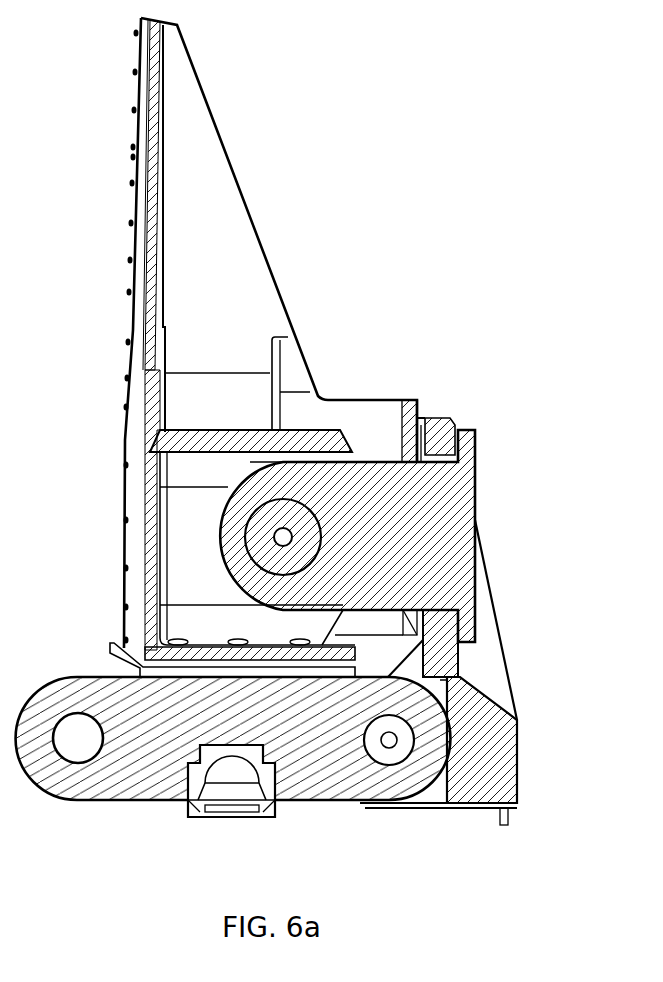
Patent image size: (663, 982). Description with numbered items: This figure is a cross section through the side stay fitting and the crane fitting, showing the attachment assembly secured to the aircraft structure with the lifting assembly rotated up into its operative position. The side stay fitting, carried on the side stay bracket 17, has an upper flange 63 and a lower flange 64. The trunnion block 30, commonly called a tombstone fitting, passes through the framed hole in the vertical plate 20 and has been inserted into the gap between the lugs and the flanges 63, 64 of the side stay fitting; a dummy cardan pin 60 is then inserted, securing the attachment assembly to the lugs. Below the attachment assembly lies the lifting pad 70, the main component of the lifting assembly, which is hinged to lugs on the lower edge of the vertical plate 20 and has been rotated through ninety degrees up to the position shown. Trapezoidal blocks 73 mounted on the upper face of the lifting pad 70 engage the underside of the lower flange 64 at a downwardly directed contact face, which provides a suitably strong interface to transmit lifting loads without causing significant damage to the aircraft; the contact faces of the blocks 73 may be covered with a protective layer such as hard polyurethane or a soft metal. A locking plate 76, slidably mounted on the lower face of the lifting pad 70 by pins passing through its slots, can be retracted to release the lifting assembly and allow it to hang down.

The side stay bracket 17 is at (250, 222).
The vertical plate 20 is at (520, 752).
The trunnion block 30 is at (365, 462).
The dummy cardan pin 60 is at (320, 520).
The upper flange 63 is at (315, 427).
The lower flange 64 is at (197, 645).
The lifting pad 70 is at (316, 800).
The trapezoidal blocks 73 is at (137, 670).
The locking plate 76 is at (447, 808).